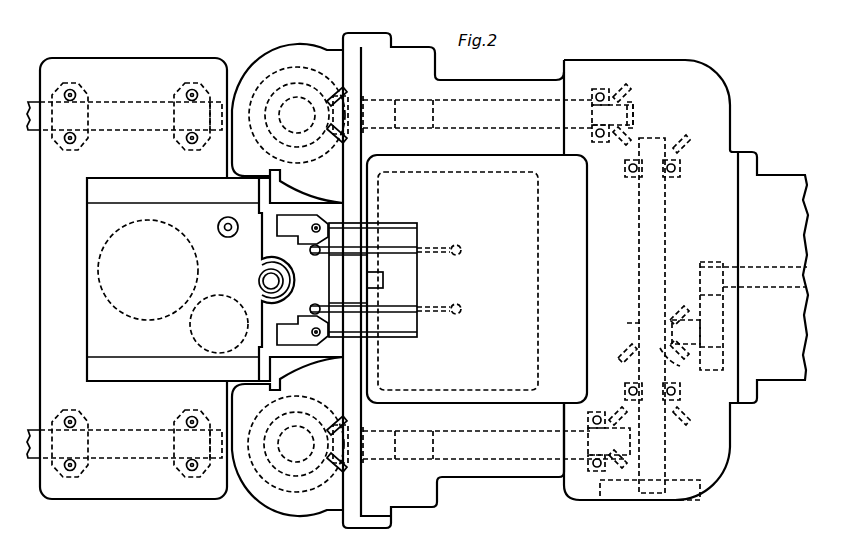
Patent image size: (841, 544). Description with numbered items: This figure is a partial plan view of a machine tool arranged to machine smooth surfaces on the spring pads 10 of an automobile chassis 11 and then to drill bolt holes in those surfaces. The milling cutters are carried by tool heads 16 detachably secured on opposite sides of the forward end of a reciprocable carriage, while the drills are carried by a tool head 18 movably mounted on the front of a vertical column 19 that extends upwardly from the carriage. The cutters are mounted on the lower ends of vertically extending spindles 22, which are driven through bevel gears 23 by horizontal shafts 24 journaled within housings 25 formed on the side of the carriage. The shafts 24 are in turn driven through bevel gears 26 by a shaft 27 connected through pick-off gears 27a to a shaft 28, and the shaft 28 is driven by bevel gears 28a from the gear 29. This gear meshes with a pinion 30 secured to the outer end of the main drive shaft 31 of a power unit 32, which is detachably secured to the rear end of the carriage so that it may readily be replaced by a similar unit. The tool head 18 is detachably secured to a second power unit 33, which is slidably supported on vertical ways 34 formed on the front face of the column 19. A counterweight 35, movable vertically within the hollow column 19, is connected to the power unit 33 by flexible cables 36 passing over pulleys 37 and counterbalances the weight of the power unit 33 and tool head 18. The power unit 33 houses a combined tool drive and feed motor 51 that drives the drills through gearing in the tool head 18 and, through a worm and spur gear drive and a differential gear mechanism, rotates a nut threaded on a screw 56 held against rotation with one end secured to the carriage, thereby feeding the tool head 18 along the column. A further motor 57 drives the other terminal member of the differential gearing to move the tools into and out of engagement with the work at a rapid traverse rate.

The spring pads 10 is at (87, 97).
The automobile chassis 11 is at (131, 131).
The tool heads 16 is at (302, 43).
The tool head 18 is at (96, 498).
The vertical column 19 is at (568, 280).
The spindles 22 is at (292, 100).
The bevel gears 23 is at (333, 90).
The horizontal shafts 24 is at (506, 131).
The housings 25 is at (541, 90).
The bevel gears 26 is at (618, 152).
The shaft 27 is at (641, 263).
The pick-off gears 27a is at (688, 481).
The shaft 28 is at (666, 460).
The bevel gears 28a is at (686, 370).
The gear 29 is at (725, 352).
The pinion 30 is at (700, 268).
The main drive shaft 31 is at (753, 267).
The power unit 32 is at (789, 177).
The power unit 33 is at (92, 323).
The vertical ways 34 is at (300, 222).
The counterweight 35 is at (541, 323).
The flexible cables 36 is at (433, 250).
The pulleys 37 is at (340, 257).
The combined tool drive and feed motor 51 is at (152, 318).
The screw 56 is at (260, 284).
The motor 57 is at (194, 331).